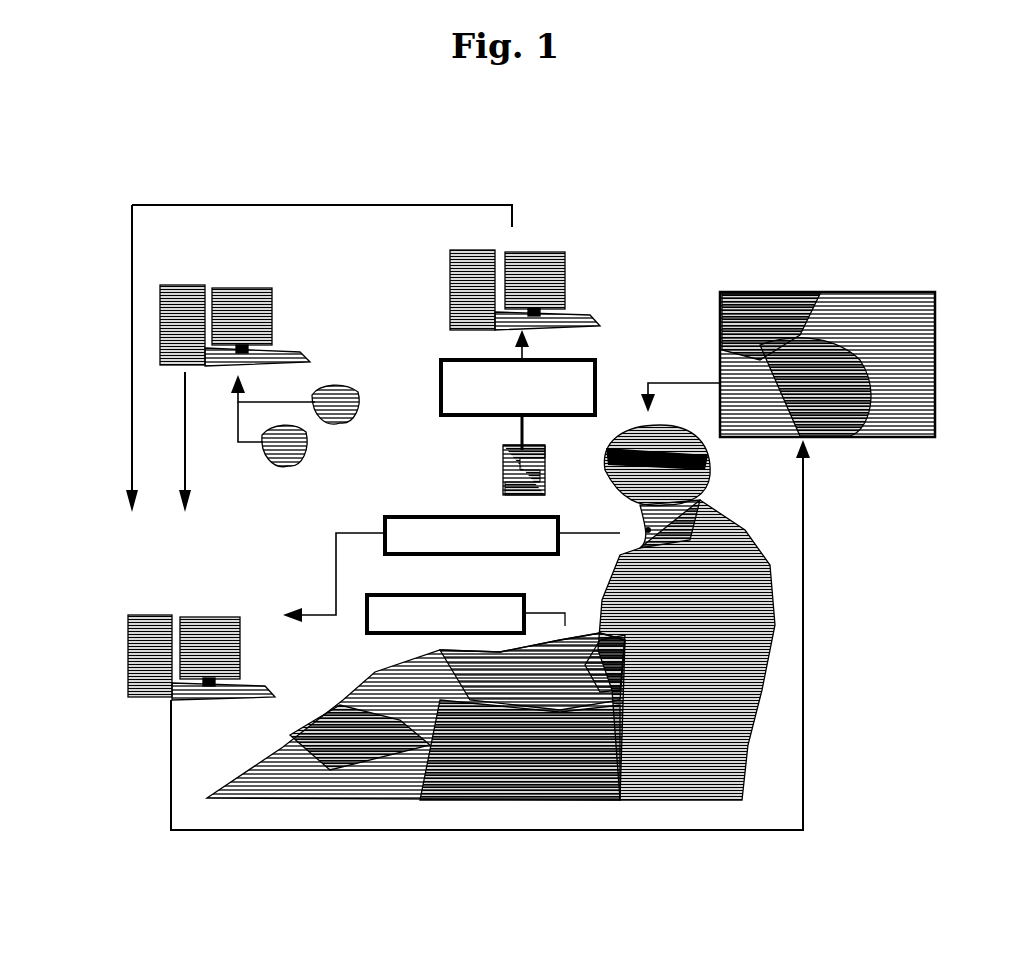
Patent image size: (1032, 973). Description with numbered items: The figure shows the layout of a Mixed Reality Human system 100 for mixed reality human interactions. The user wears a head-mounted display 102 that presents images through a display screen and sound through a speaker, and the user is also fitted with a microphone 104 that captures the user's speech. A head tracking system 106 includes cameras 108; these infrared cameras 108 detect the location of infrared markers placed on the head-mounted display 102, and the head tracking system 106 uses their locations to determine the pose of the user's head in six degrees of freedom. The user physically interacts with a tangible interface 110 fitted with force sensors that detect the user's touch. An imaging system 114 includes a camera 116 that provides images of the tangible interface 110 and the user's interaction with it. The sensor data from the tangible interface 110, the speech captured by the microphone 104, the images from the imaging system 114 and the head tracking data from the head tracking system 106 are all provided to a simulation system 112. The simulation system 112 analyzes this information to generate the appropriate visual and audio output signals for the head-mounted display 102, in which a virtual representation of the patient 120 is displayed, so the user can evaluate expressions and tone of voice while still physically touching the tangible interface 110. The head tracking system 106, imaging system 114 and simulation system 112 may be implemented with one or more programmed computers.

The MRH system 100 is at (165, 72).
The head-mounted display 102 is at (612, 470).
The microphone 104 is at (647, 527).
The head tracking system 106 is at (290, 304).
The cameras 108 is at (360, 375).
The tangible interface 110 is at (590, 700).
The simulation system 112 is at (128, 677).
The imaging system 114 is at (577, 278).
The camera 116 is at (500, 462).
The virtual representation of the patient 120 is at (805, 287).